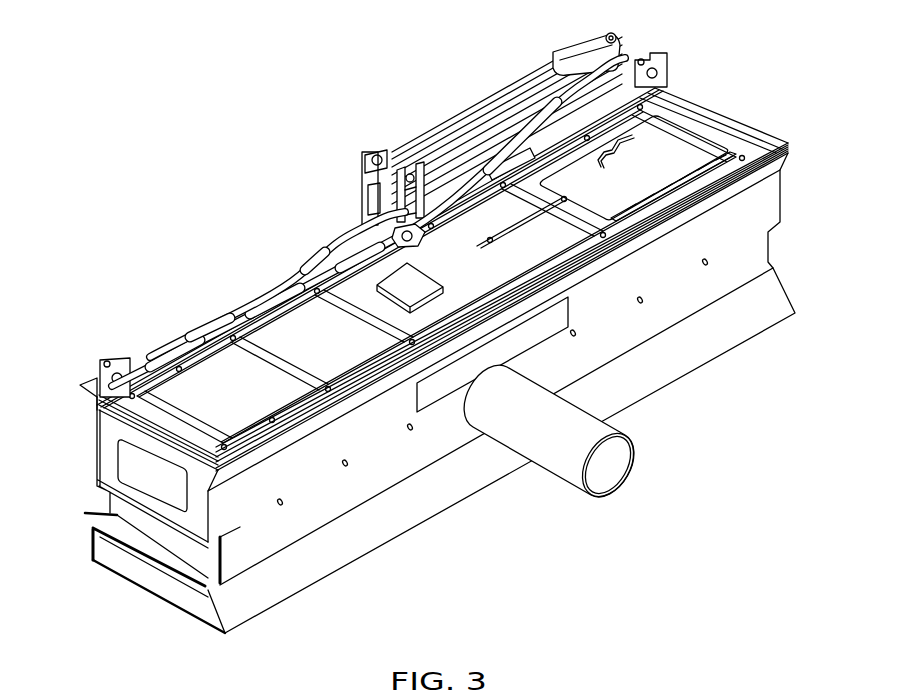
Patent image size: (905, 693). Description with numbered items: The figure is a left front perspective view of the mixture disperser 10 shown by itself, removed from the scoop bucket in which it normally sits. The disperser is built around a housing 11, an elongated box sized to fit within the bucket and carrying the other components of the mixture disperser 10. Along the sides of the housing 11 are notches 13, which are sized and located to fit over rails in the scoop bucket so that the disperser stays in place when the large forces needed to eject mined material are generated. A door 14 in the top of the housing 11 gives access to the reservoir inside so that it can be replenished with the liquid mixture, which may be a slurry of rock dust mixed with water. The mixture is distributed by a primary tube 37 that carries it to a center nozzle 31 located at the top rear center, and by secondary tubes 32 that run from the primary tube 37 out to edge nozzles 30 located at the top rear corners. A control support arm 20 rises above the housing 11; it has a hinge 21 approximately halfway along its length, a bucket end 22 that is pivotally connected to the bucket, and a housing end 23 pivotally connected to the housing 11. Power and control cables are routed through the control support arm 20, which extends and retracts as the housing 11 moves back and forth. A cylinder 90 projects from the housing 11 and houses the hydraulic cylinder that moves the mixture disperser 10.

The mixture disperser 10 is at (316, 108).
The housing 11 is at (344, 351).
The notches 13 is at (112, 505).
The door 14 is at (673, 127).
The control support arm 20 is at (507, 112).
The hinge 21 is at (607, 34).
The bucket end 22 is at (371, 157).
The housing end 23 is at (411, 187).
The edge nozzles 30 is at (108, 372).
The center nozzle 31 is at (408, 240).
The secondary tubes 32 is at (168, 330).
The primary tube 37 is at (327, 235).
The cylinder 90 is at (607, 468).